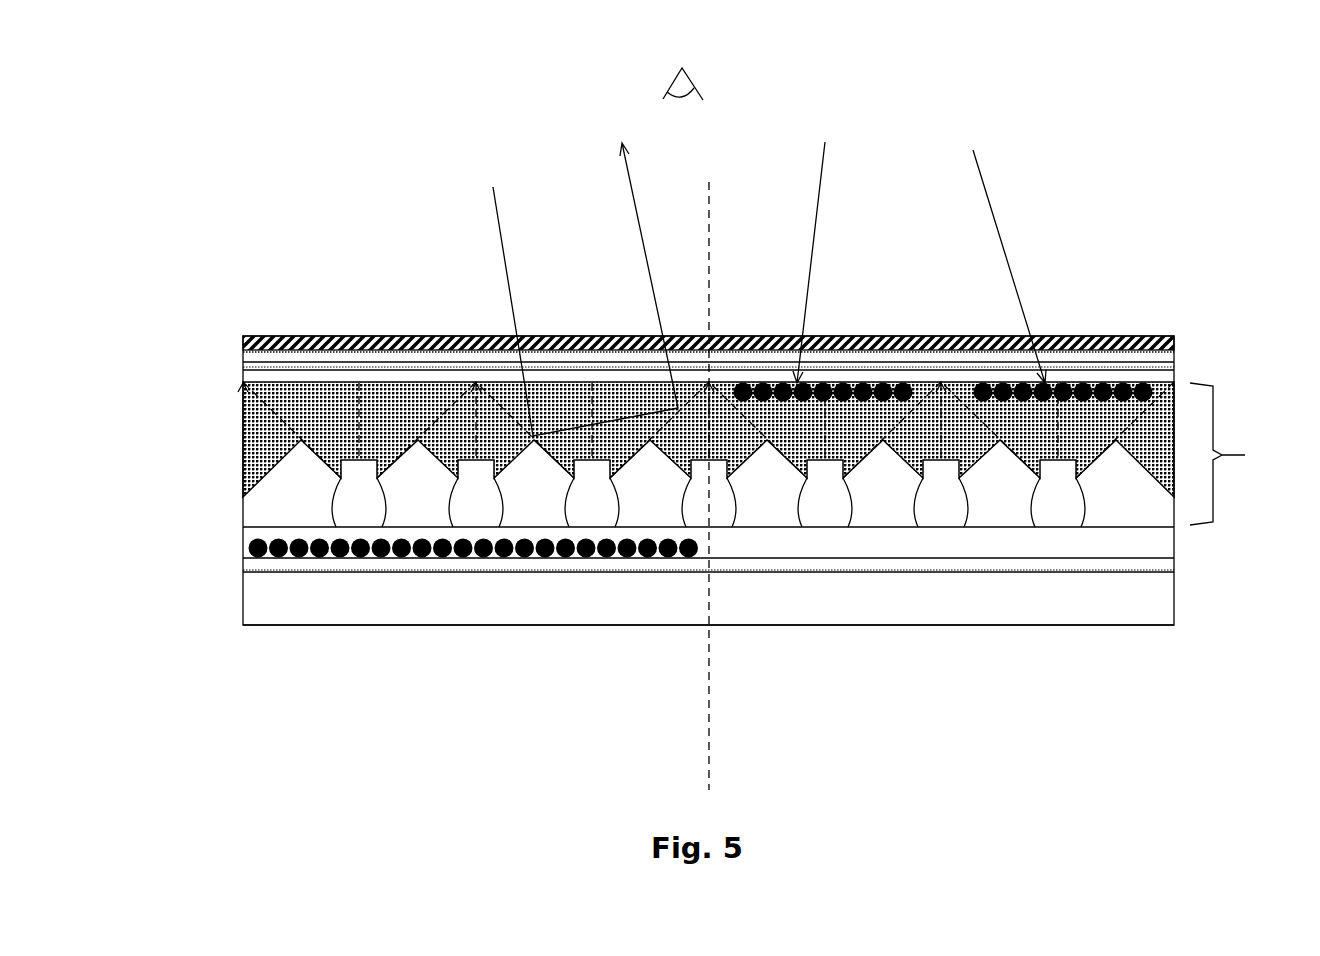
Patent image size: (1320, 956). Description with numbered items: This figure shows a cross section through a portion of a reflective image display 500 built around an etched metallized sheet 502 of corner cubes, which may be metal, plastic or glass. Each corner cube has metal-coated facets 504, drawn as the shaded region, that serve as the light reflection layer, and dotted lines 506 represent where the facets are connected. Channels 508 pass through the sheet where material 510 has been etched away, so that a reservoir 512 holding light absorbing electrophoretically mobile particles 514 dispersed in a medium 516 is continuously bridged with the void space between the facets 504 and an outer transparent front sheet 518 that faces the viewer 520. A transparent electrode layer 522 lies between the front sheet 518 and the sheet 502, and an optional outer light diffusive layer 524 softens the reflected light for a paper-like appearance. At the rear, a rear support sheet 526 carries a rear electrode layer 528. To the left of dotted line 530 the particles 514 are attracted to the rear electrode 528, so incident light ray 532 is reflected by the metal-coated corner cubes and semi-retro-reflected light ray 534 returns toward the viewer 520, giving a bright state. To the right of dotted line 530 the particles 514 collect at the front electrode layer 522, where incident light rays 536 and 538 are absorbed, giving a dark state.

The display 500 is at (1098, 293).
The etched metallized sheet 502 is at (1246, 454).
The facets 504 is at (400, 415).
The dotted lines 506 is at (270, 427).
The channels 508 is at (1057, 512).
The material 510 is at (293, 508).
The reservoir 512 is at (225, 559).
The light absorbing electrophoretically mobile particles 514 is at (897, 400).
The medium 516 is at (940, 540).
The outer transparent front sheet 518 is at (1175, 358).
The viewer 520 is at (700, 83).
The transparent electrode layer 522 is at (243, 371).
The outer light diffusive layer 524 is at (270, 336).
The rear support sheet 526 is at (408, 613).
The rear electrode layer 528 is at (1157, 567).
The dotted line 530 is at (710, 247).
The incident light ray 532 is at (507, 275).
The light ray 534 is at (648, 273).
The incident light ray 536 is at (818, 215).
The incident light ray 538 is at (1000, 222).